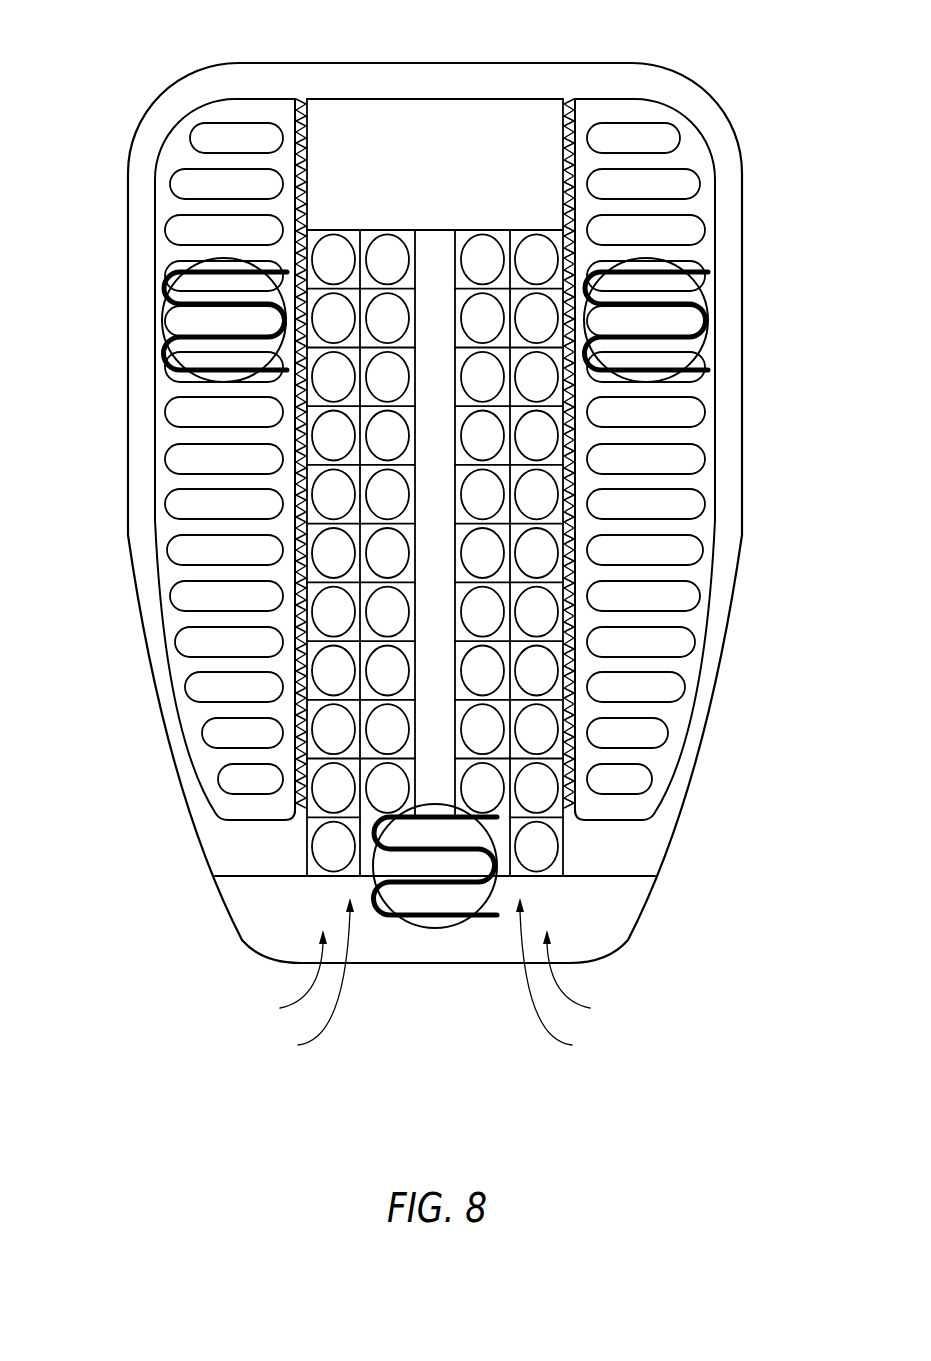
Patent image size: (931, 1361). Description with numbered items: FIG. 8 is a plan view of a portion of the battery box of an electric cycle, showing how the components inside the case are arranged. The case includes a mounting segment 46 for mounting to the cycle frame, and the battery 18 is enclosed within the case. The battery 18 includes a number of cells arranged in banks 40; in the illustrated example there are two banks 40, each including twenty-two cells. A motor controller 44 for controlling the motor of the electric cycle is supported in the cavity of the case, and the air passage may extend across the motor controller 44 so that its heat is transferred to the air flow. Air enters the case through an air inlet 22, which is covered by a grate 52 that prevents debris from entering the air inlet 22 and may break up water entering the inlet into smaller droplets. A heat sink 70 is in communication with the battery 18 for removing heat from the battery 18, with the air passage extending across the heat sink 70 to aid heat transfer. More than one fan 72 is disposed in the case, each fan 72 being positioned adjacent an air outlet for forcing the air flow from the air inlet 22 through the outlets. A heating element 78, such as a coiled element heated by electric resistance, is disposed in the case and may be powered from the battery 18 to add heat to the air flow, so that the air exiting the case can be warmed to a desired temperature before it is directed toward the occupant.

The battery 18 is at (435, 981).
The air inlet 22 is at (213, 733).
The bank 40 is at (435, 978).
The motor controller 44 is at (362, 125).
The mounting segment 46 is at (728, 253).
The grate 52 is at (167, 527).
The heat sink 70 is at (303, 812).
The fan 72 is at (165, 326).
The heating element 78 is at (203, 303).